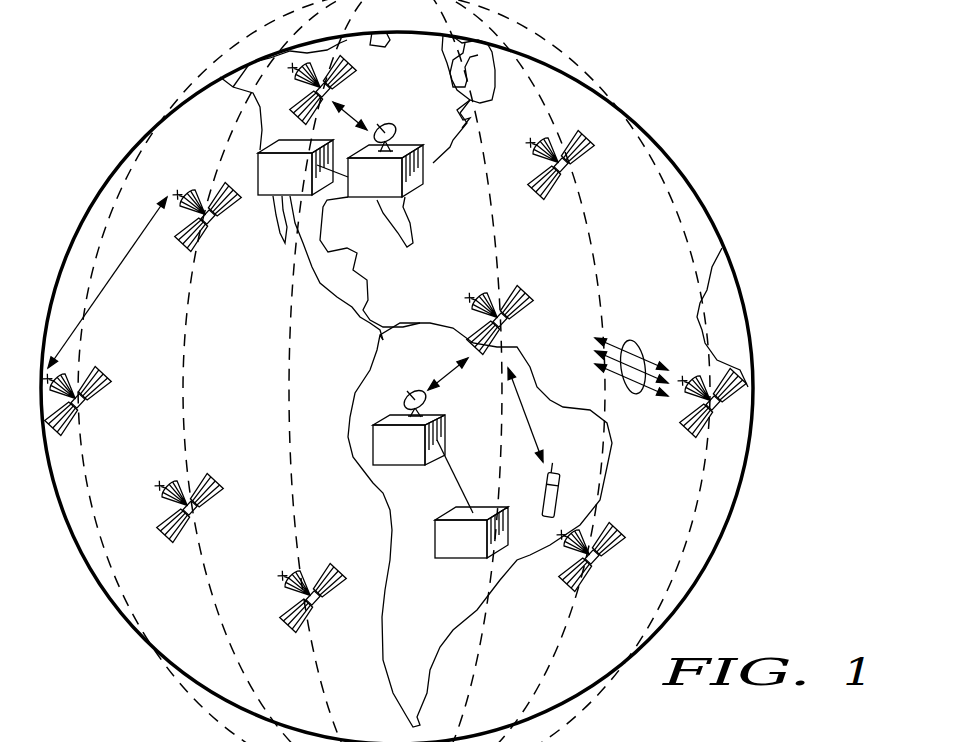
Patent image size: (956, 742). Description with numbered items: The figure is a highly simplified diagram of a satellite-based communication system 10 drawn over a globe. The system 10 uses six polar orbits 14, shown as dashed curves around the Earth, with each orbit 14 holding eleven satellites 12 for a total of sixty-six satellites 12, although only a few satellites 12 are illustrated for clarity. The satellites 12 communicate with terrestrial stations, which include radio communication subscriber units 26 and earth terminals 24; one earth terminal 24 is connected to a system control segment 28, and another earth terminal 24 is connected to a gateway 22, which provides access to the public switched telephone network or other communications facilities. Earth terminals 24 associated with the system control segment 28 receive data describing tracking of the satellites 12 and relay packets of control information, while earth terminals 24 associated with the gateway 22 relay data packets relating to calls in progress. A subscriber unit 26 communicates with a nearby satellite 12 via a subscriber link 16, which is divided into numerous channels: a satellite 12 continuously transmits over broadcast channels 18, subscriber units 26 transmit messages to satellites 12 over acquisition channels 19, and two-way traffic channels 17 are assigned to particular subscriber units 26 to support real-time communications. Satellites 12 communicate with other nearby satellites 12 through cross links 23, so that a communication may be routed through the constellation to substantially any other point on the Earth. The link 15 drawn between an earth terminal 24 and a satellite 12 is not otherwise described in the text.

The communication system 10 is at (822, 601).
The satellite 12 is at (352, 76).
The polar orbit 14 is at (183, 357).
The earth terminal link 15 is at (440, 373).
The subscriber link 16 is at (532, 428).
The traffic channel 17 is at (652, 362).
The broadcast channel 18 is at (650, 394).
The acquisition channel 19 is at (598, 368).
The gateway 22 is at (455, 559).
The cross link 23 is at (125, 252).
The earth terminal 24 is at (420, 143).
The subscriber unit 26 is at (558, 482).
The system control segment 28 is at (291, 190).